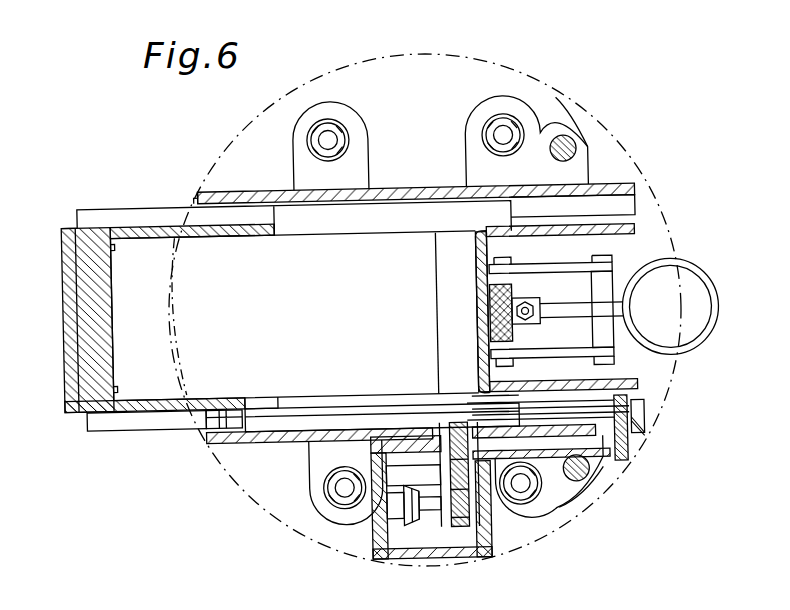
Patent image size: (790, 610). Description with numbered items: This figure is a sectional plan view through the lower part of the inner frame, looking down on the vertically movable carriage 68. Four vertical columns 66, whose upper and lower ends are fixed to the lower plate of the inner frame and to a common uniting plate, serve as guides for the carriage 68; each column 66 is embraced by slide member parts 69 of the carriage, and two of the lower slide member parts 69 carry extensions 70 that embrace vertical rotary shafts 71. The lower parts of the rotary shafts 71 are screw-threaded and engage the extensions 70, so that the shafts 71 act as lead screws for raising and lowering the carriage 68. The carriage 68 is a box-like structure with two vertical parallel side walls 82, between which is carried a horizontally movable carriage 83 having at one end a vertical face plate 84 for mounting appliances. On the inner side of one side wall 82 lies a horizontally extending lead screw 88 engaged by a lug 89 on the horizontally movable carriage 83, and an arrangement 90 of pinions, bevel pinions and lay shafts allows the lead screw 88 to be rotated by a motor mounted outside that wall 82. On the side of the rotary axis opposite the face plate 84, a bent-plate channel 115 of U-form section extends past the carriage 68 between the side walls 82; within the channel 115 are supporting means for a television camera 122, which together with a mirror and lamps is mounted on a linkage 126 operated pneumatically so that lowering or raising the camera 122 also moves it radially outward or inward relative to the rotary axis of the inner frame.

The columns 66 is at (324, 125).
The carriage 68 is at (220, 188).
The slide member parts 69 is at (334, 108).
The extensions 70 is at (582, 140).
The vertical rotary shafts 71 is at (576, 153).
The vertical side walls 82 is at (249, 198).
The horizontally movable carriage 83 is at (150, 224).
The vertical face plate 84 is at (98, 311).
The lead screw 88 is at (291, 419).
The lug 89 is at (233, 423).
The arrangement of pinions, bevel pinions and lay shafts 90 is at (411, 539).
The bent-plate channel 115 is at (642, 234).
The television camera 122 is at (692, 303).
The linkage 126 is at (537, 355).